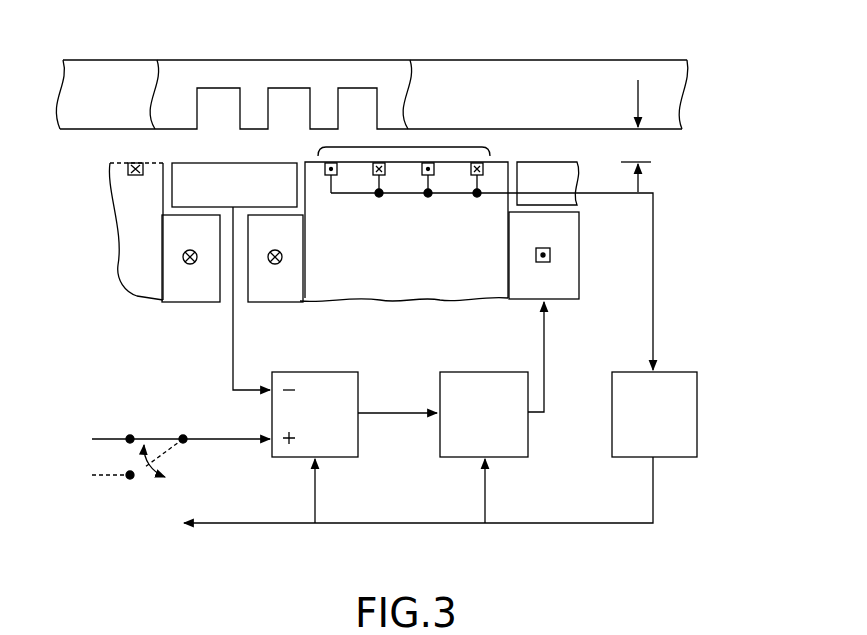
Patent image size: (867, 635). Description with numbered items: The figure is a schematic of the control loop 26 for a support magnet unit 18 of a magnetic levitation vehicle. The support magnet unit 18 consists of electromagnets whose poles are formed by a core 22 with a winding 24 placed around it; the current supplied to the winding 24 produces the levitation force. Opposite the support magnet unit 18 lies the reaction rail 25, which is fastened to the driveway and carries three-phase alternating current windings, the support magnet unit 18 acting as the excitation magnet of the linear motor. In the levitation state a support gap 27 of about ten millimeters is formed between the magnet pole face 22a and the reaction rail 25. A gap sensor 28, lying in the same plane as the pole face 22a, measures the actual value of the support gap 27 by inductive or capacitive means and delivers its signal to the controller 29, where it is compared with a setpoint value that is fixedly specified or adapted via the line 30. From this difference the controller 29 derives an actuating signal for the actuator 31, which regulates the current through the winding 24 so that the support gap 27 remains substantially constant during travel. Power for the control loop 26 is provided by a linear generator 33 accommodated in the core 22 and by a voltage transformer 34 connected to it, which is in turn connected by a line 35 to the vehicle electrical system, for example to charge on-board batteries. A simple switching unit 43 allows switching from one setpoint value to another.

The support magnet unit 18 is at (126, 305).
The core 22 is at (484, 293).
The magnet pole face 22a is at (316, 180).
The winding 24 is at (565, 263).
The reaction rail 25 is at (541, 75).
The control loop 26 is at (399, 494).
The support gap 27 is at (646, 145).
The gap sensor 28 is at (180, 184).
The controller 29 is at (312, 377).
The line 30 is at (218, 438).
The actuator 31 is at (522, 422).
The linear generator 33 is at (403, 147).
The voltage transformer 34 is at (690, 422).
The line 35 is at (243, 523).
The switching unit 43 is at (145, 467).